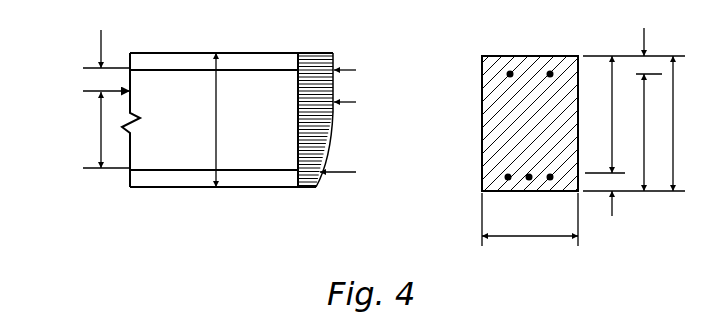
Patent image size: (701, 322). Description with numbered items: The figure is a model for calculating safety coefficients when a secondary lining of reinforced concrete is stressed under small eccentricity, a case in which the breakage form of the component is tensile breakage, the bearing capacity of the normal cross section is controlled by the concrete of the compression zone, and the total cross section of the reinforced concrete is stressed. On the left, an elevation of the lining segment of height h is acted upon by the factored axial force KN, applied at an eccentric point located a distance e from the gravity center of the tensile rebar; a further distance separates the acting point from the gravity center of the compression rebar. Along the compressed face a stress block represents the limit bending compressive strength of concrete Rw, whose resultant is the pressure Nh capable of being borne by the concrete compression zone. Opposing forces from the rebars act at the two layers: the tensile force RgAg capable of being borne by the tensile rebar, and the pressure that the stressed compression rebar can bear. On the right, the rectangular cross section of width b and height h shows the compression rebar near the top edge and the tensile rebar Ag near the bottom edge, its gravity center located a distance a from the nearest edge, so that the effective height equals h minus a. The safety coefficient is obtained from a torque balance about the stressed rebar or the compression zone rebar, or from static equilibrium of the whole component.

The limit bending compressive strength of concrete Rw is at (315, 106).
The height of cross section h is at (432, 122).
The factored axial force KN is at (88, 91).
The distance from gravity center of tensile rebar to acting point of axial force e is at (102, 99).
The tensile force borne by tensile rebar RgAg is at (360, 122).
The pressure borne by concrete compression zone Nh is at (357, 103).
The width of rectangular cross section b is at (530, 151).
The cross section area of rebar in tensile zone Ag is at (525, 203).
The distance from gravity center of tensile rebar to nearest edge a is at (633, 122).